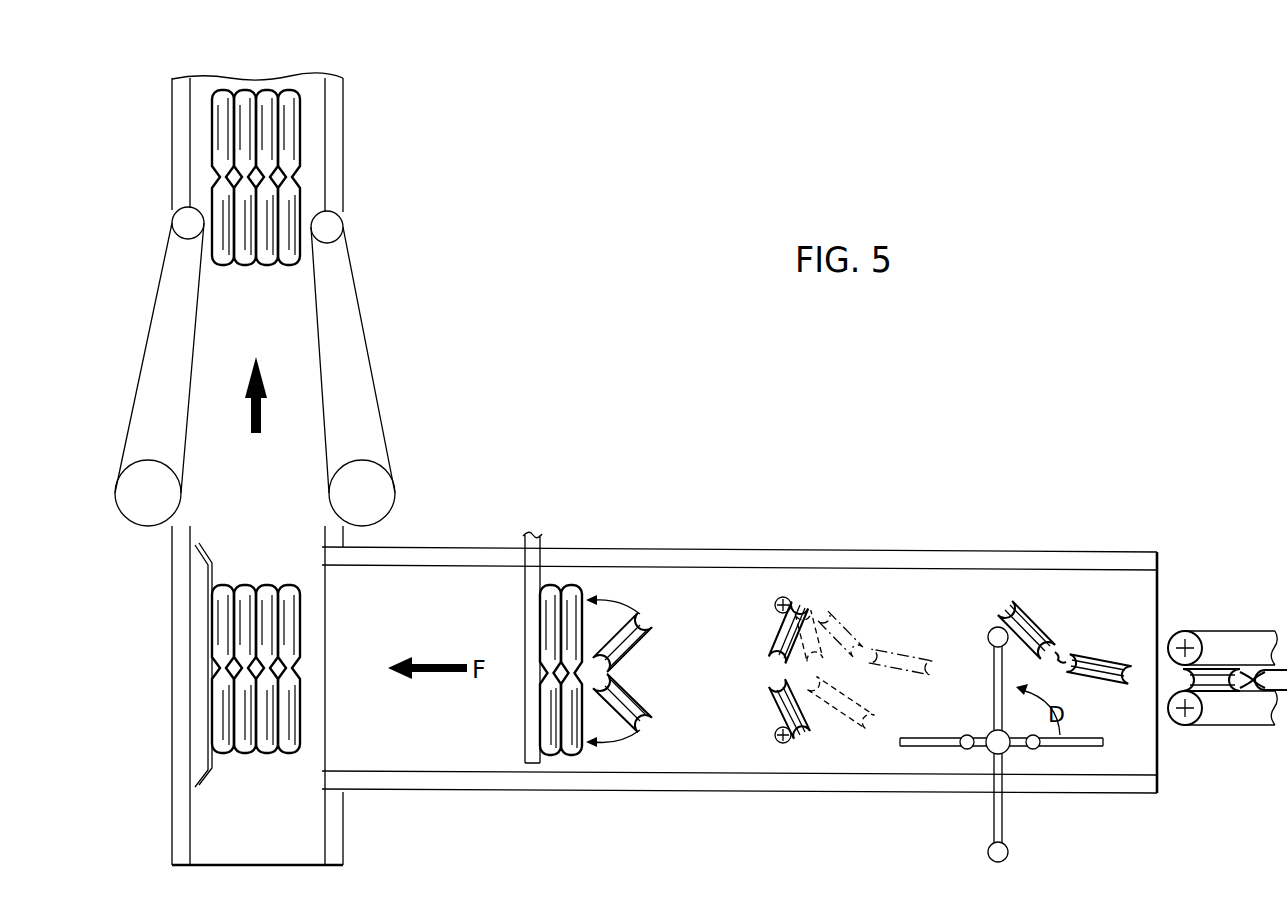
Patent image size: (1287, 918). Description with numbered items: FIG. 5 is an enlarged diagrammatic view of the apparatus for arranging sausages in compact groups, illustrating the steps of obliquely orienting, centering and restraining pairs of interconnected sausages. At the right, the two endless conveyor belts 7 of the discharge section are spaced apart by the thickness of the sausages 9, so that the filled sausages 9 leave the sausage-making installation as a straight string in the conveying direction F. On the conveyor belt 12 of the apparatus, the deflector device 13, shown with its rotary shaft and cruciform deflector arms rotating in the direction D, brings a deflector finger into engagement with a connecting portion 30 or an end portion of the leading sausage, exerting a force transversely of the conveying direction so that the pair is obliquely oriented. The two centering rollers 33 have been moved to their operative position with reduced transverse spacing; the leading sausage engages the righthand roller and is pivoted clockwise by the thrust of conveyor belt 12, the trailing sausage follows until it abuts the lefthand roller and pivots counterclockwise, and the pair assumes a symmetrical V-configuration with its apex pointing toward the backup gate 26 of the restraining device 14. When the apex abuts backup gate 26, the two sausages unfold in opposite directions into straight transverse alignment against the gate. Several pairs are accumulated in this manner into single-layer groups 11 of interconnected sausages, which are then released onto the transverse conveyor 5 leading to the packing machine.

The conveyor 5 is at (275, 818).
The conveyor belts 7 is at (1237, 653).
The sausages 9 is at (1100, 668).
The groups of interconnected sausages 11 is at (290, 197).
The conveyor belt 12 is at (950, 590).
The deflector device 13 is at (990, 797).
The restraining device 14 is at (514, 700).
The backup gate 26 is at (532, 700).
The connecting portion 30 is at (758, 606).
The centering rollers 33 is at (778, 598).